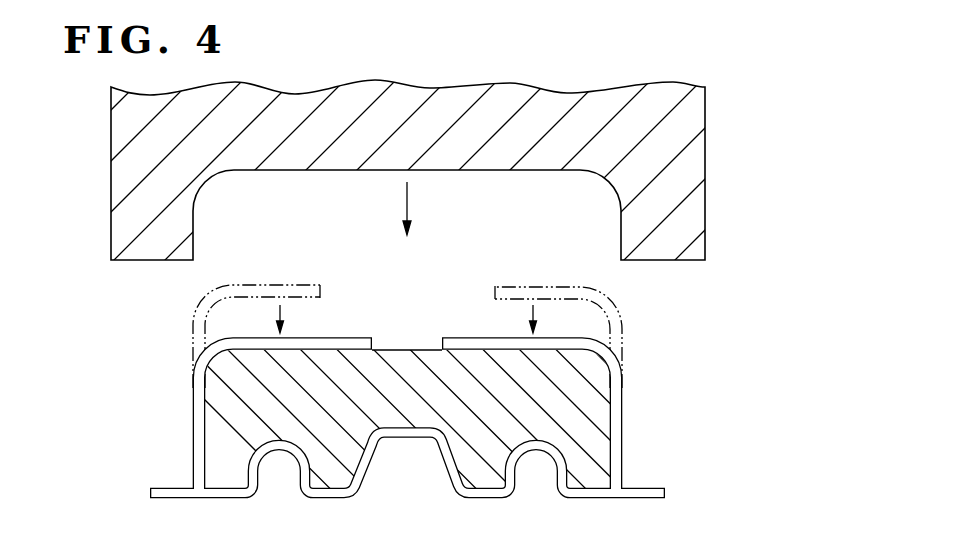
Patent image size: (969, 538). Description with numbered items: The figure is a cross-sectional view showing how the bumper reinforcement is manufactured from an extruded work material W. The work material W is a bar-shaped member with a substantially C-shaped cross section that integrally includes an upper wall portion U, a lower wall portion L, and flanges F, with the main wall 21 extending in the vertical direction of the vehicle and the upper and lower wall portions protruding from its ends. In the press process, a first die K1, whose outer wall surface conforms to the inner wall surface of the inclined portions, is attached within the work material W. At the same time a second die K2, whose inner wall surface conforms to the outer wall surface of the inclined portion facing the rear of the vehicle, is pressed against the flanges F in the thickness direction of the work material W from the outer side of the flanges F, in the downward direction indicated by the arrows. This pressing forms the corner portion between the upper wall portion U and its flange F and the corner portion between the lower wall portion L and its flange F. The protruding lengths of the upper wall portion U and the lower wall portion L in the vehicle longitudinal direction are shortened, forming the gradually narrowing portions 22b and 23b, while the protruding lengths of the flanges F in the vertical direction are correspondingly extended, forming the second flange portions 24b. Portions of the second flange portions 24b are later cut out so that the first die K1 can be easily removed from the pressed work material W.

The second die K2 is at (697, 162).
The first die K1 is at (598, 418).
The main wall 21 is at (478, 499).
The gradually narrowing portion 22b is at (193, 408).
The gradually narrowing portion 23b is at (618, 437).
The second flange portion 24b is at (465, 335).
The upper wall portion U is at (193, 322).
The lower wall portion L is at (625, 327).
The flanges F is at (495, 291).
The work material W is at (565, 283).